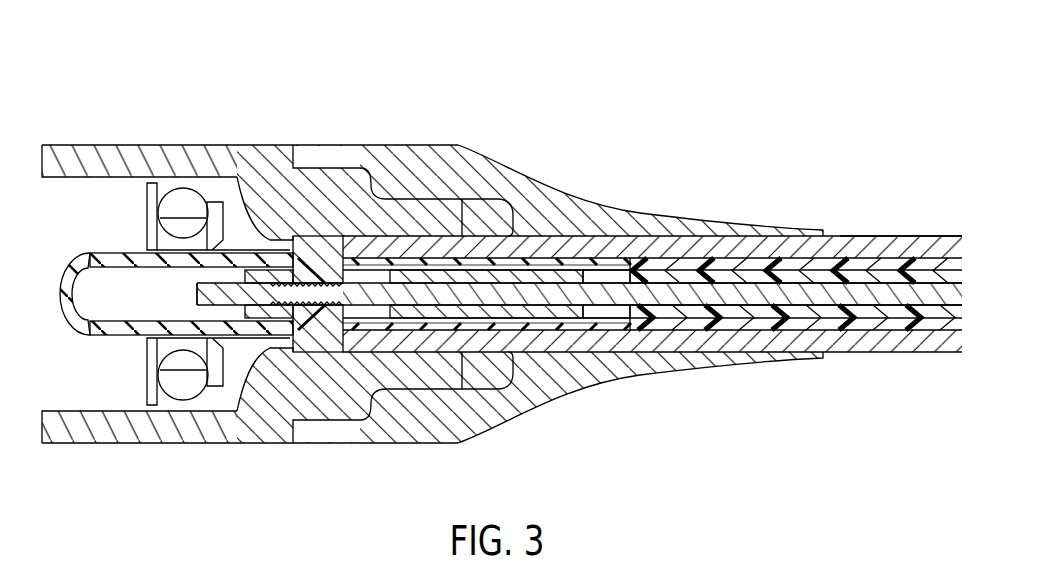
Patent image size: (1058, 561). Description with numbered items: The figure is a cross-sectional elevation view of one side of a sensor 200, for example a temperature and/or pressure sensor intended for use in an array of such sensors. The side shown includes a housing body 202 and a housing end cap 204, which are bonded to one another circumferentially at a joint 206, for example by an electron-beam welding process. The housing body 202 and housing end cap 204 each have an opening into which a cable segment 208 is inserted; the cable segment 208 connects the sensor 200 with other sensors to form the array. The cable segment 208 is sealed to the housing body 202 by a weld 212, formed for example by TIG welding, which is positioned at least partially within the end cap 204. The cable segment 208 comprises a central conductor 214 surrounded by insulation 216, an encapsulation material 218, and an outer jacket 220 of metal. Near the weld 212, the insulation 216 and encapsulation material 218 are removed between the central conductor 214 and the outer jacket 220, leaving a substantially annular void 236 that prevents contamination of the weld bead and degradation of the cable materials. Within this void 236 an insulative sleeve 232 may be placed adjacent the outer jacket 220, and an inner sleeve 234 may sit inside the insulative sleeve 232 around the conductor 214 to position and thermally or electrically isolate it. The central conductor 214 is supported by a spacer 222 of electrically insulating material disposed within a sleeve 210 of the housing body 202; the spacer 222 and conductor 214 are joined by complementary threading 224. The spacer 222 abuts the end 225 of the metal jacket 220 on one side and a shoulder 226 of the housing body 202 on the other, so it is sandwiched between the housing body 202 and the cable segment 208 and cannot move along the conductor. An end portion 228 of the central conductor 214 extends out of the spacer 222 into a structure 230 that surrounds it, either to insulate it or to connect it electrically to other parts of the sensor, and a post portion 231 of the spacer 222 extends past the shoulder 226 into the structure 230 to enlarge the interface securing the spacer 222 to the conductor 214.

The sensor 200 is at (829, 74).
The housing body 202 is at (75, 145).
The housing end cap 204 is at (610, 218).
The joint 206 is at (293, 148).
The cable segment 208 is at (872, 236).
The sleeve 210 is at (393, 223).
The weld 212 is at (468, 213).
The central conductor 214 is at (837, 293).
The insulation 216 is at (870, 308).
The encapsulation material 218 is at (908, 323).
The outer jacket 220 is at (942, 347).
The spacer 222 is at (275, 350).
The complementary threading 224 is at (311, 284).
The end 225 is at (340, 342).
The shoulder 226 is at (260, 355).
The end portion 228 is at (203, 289).
The structure 230 is at (123, 332).
The post portion 231 is at (240, 333).
The insulative sleeve 232 is at (428, 330).
The inner sleeve 234 is at (487, 316).
The void 236 is at (598, 312).